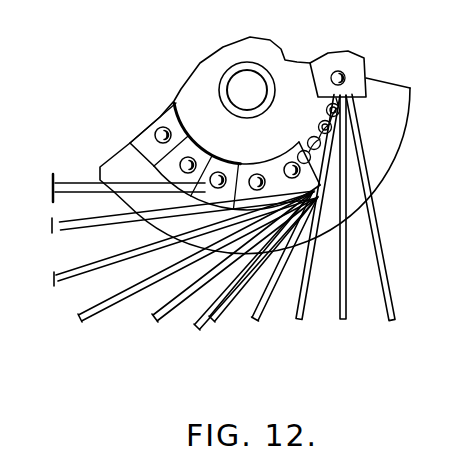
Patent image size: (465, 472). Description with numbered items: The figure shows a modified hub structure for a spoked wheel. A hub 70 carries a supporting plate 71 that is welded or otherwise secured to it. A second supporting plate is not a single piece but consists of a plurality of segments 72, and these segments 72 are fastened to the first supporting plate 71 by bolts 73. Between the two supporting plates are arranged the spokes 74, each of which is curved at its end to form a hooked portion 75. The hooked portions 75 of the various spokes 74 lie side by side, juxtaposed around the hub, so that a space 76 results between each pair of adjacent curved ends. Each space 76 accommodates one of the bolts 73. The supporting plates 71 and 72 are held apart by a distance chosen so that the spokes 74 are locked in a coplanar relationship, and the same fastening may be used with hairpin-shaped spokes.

The hub 70 is at (268, 68).
The supporting plate 71 is at (386, 90).
The segments 72 is at (206, 148).
The bolts 73 is at (257, 173).
The spokes 74 is at (198, 329).
The hooked portions 75 is at (328, 121).
The space 76 is at (332, 130).